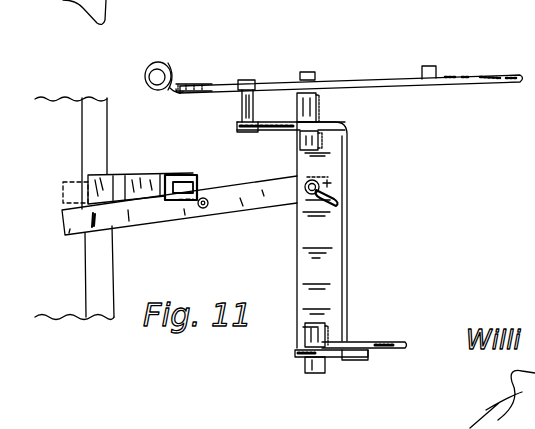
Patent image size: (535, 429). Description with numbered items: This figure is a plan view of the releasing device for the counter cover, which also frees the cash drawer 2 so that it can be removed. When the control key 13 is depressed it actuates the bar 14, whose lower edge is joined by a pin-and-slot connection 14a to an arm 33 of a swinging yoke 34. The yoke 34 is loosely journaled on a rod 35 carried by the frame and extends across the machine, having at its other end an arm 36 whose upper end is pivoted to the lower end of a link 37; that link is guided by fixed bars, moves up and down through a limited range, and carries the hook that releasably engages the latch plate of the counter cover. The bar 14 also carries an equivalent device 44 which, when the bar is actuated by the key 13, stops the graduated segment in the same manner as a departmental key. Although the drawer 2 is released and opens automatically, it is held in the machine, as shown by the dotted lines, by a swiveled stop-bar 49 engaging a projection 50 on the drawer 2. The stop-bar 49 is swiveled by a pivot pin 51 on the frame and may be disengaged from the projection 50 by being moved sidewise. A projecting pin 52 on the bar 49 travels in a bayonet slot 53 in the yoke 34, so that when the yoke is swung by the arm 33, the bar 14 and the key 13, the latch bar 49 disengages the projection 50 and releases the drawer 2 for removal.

The cash drawer 2 is at (74, 208).
The control key 13 is at (163, 62).
The bar 14 is at (273, 85).
The pin-and-slot connection 14a is at (246, 79).
The arm 33 is at (262, 123).
The swinging yoke 34 is at (338, 137).
The rod 35 is at (321, 100).
The arm 36 is at (298, 355).
The link 37 is at (385, 343).
The equivalent device 44 is at (430, 66).
The swiveled stop-bar 49 is at (63, 197).
The projection 50 is at (100, 186).
The pivot pin 51 is at (205, 198).
The projecting pin 52 is at (338, 182).
The bayonet slot 53 is at (342, 199).